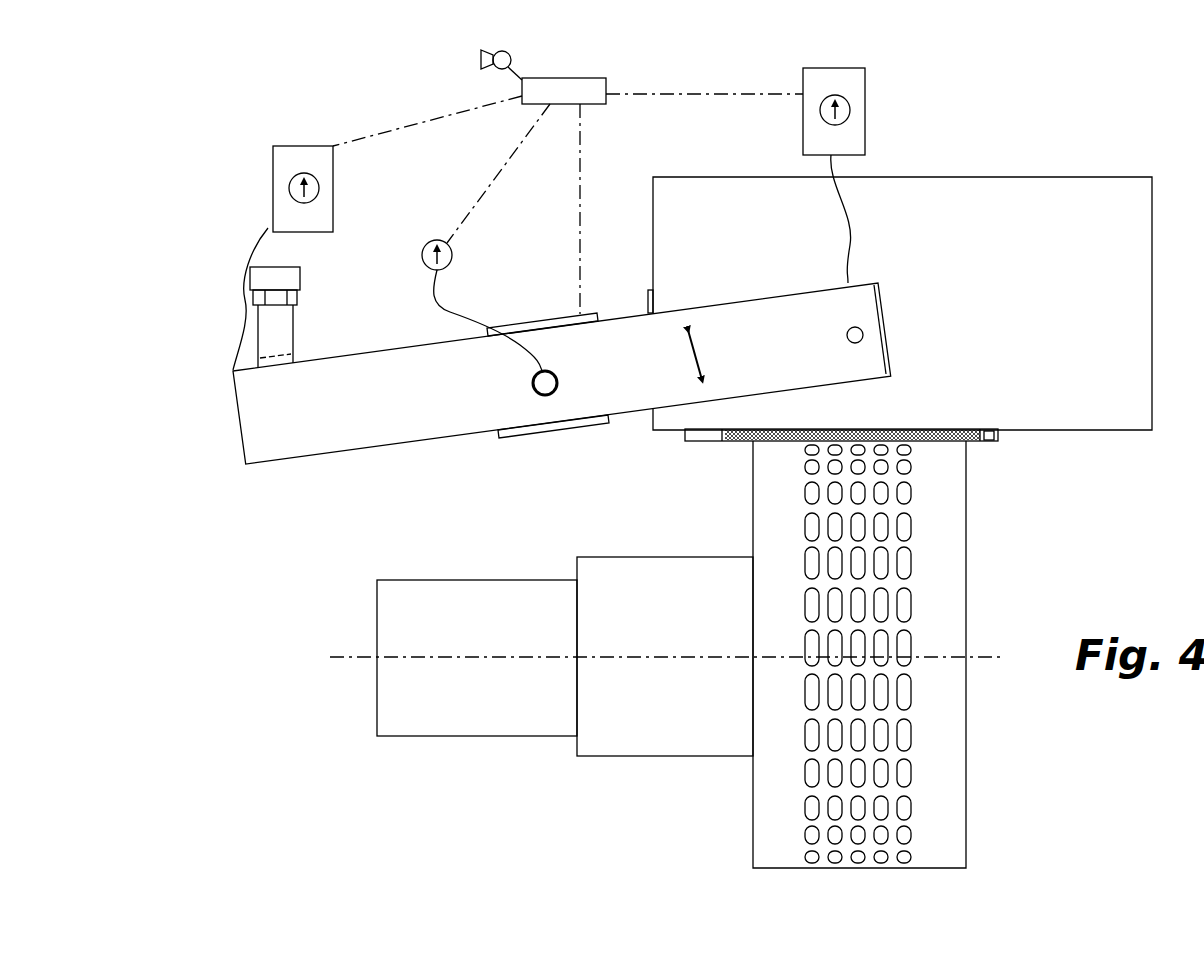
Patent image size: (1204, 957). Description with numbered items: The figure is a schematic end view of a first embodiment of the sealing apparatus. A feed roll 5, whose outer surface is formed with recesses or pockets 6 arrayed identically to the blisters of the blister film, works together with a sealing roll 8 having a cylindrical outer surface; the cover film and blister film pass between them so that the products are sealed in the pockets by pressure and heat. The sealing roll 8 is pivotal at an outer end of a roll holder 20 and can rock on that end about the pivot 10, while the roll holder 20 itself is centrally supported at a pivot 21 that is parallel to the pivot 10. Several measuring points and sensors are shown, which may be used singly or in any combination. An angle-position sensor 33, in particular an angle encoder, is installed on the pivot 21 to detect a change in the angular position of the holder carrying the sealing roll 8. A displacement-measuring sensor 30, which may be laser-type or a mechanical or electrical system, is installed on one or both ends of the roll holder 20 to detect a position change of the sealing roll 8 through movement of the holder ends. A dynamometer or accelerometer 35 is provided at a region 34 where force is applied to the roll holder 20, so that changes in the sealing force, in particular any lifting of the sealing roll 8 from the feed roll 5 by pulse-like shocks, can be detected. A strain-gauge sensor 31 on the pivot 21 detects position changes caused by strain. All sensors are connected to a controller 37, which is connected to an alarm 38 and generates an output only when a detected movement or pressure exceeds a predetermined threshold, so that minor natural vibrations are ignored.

The feed roll 5 is at (935, 742).
The recesses or pockets 6 is at (912, 607).
The sealing roll 8 is at (984, 443).
The pivot 10 is at (862, 338).
The roll holder 20 is at (252, 408).
The pivot 21 is at (533, 388).
The displacement-measuring sensor 30 is at (273, 186).
The strain-gauge sensor 31 is at (514, 327).
The angle-position sensor 33 is at (422, 246).
The region of application of force 34 is at (272, 328).
The dynamometer or accelerometer 35 is at (283, 277).
The controller 37 is at (592, 78).
The alarm 38 is at (501, 50).